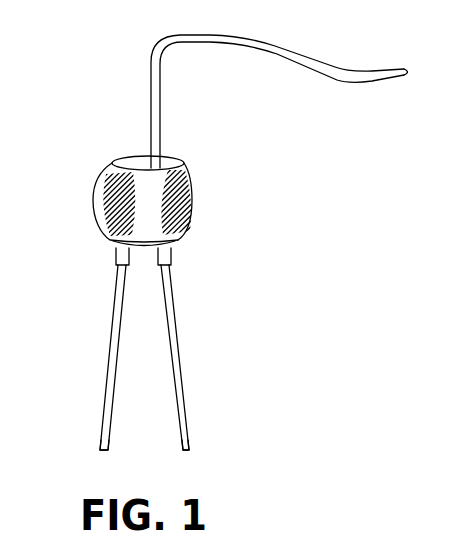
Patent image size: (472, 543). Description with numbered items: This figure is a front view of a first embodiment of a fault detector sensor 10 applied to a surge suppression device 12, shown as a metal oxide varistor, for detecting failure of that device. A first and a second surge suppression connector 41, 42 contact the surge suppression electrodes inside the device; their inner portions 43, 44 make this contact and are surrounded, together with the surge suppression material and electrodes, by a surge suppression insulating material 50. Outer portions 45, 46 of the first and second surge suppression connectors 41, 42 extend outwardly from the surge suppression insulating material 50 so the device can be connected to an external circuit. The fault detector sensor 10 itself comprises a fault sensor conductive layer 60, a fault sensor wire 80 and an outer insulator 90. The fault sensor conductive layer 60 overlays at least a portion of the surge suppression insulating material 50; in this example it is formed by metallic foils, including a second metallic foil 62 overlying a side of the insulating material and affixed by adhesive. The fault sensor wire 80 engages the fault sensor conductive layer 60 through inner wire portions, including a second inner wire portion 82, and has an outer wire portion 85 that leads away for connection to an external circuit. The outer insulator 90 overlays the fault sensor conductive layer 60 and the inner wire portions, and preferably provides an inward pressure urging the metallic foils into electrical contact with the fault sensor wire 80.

The fault detector sensor 10 is at (90, 93).
The surge suppression device 12 is at (133, 164).
The first surge suppression connector 41 is at (112, 352).
The second surge suppression connector 42 is at (177, 353).
The inner portion of first surge suppression connector 43 is at (116, 247).
The inner portion of second surge suppression connector 44 is at (173, 247).
The outer portion of first surge suppression connector 45 is at (100, 436).
The outer portion of second surge suppression connector 46 is at (190, 438).
The surge suppression insulating material 50 is at (144, 247).
The fault sensor conductive layer 60 is at (183, 172).
The second metallic foil 62 is at (172, 212).
The fault sensor wire 80 is at (338, 81).
The second inner wire portion 82 is at (122, 205).
The outer wire portion 85 is at (387, 72).
The outer insulator 90 is at (182, 193).